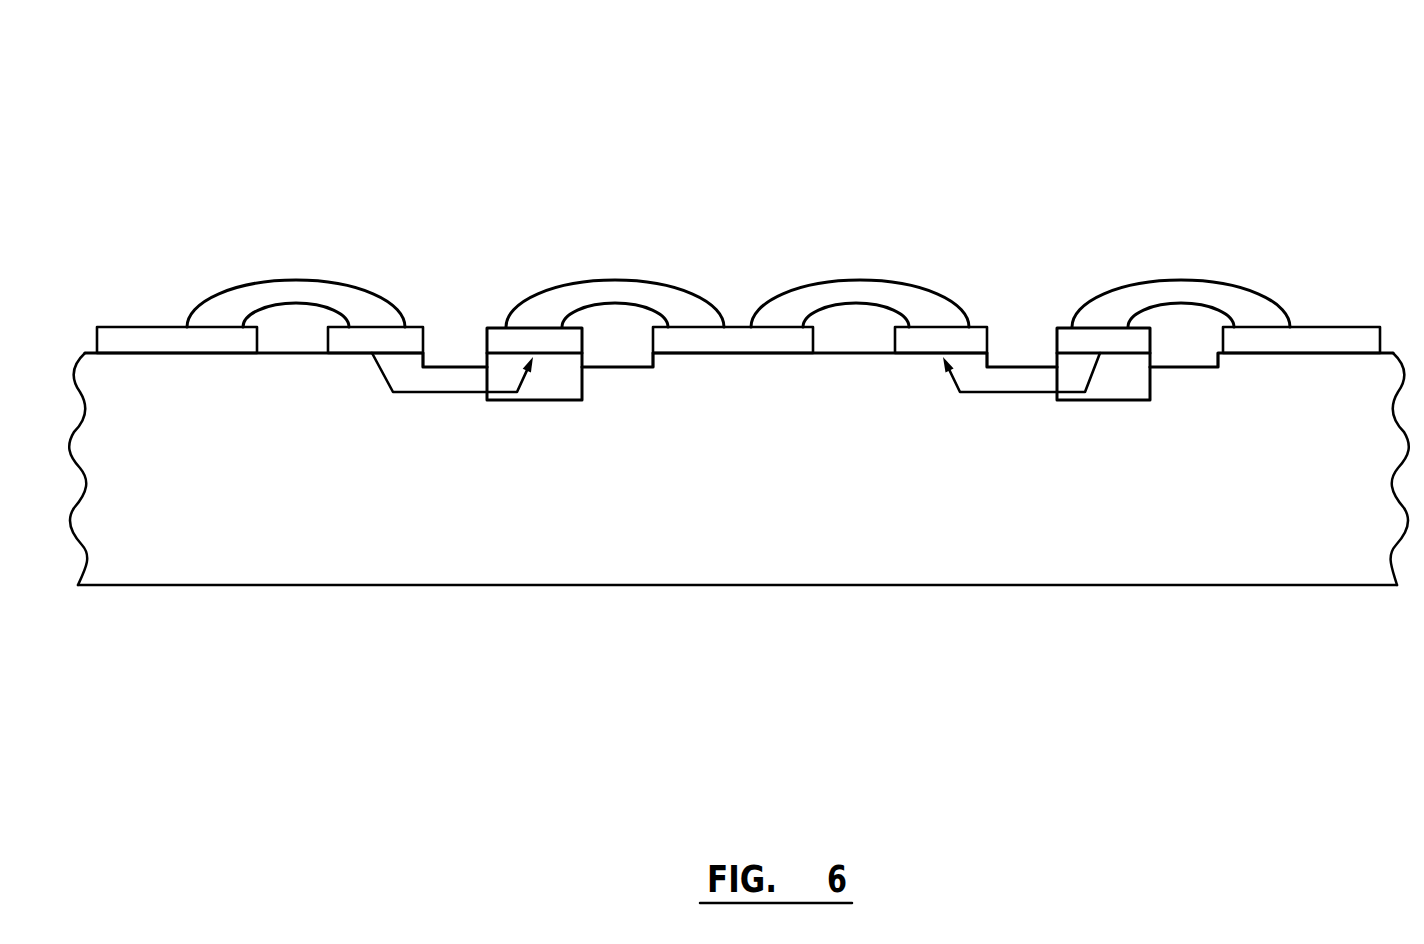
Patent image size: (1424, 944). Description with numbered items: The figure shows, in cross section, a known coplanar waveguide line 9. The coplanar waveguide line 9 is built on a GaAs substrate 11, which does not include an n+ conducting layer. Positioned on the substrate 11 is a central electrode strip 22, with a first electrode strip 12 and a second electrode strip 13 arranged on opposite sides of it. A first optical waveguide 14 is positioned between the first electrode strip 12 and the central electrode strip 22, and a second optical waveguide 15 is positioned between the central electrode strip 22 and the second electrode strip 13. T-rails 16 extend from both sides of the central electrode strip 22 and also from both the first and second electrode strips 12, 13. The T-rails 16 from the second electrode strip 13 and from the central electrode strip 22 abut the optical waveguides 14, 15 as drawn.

The coplanar waveguide line 9 is at (439, 132).
The GaAs substrate 11 is at (920, 525).
The first electrode strip 12 is at (172, 345).
The second electrode strip 13 is at (1307, 343).
The first optical waveguide 14 is at (550, 385).
The second optical waveguide 15 is at (1115, 385).
The T-rails 16 is at (292, 256).
The central electrode strip 22 is at (735, 343).